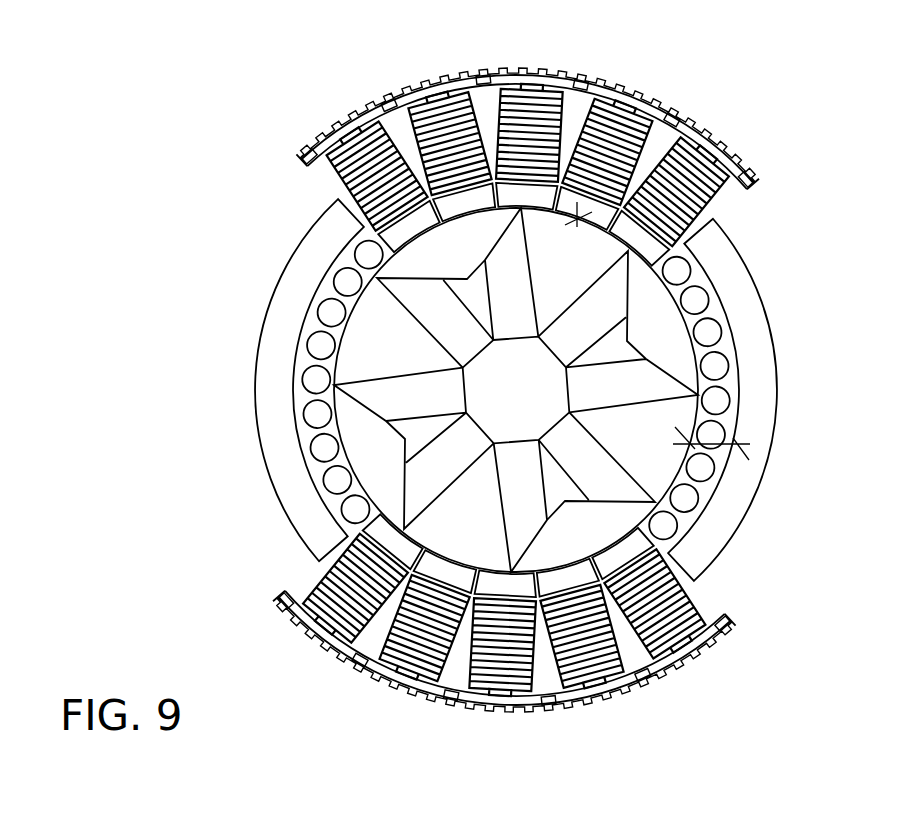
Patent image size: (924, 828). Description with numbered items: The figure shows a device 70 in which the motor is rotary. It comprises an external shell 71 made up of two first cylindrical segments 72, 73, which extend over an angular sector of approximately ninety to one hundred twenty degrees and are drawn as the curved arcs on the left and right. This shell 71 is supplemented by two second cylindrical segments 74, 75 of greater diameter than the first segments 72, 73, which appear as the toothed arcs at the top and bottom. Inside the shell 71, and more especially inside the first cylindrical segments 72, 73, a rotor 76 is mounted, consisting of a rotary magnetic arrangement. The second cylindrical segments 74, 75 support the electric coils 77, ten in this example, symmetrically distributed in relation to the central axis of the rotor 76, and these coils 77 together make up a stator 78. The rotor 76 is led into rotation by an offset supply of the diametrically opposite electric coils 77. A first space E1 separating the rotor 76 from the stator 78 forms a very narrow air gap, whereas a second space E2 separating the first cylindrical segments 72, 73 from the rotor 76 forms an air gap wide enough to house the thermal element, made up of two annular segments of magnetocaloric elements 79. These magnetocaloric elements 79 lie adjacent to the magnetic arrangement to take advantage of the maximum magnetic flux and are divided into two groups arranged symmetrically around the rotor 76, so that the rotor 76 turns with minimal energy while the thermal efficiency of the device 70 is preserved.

The device 70 is at (212, 370).
The external shell 71 is at (258, 231).
The first cylindrical segment 72 is at (290, 472).
The first cylindrical segment 73 is at (738, 485).
The second cylindrical segment 74 is at (616, 78).
The second cylindrical segment 75 is at (596, 710).
The rotor 76 is at (633, 382).
The electric coils 77 is at (712, 150).
The stator 78 is at (318, 182).
The magnetocaloric elements 79 is at (698, 298).
The first space E1 is at (568, 228).
The second space E2 is at (698, 440).